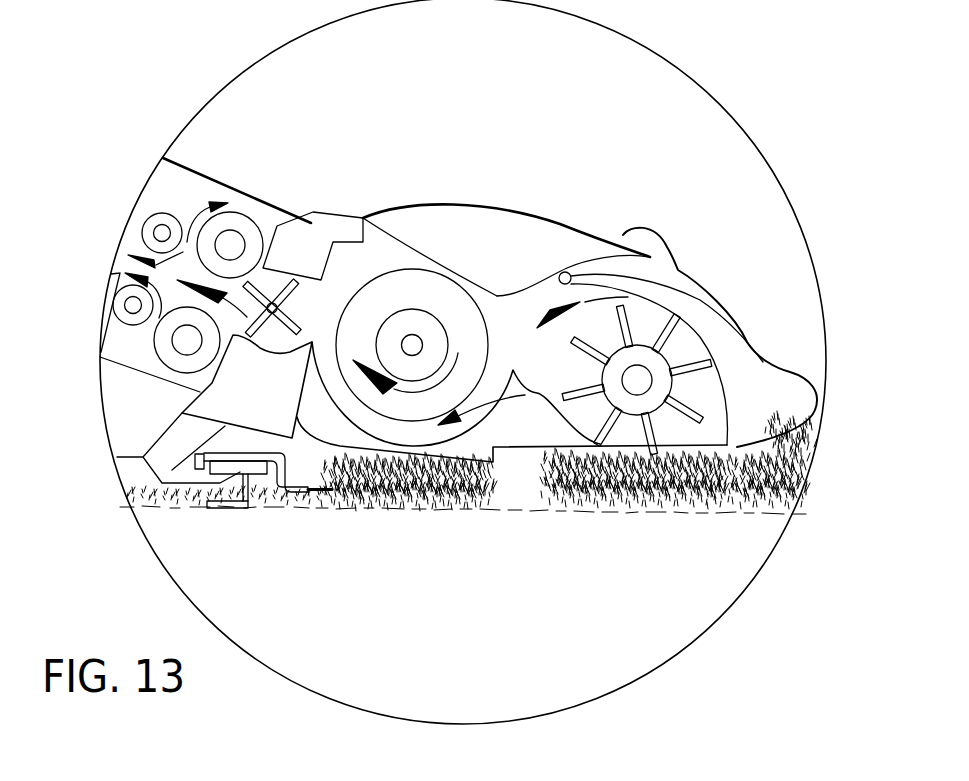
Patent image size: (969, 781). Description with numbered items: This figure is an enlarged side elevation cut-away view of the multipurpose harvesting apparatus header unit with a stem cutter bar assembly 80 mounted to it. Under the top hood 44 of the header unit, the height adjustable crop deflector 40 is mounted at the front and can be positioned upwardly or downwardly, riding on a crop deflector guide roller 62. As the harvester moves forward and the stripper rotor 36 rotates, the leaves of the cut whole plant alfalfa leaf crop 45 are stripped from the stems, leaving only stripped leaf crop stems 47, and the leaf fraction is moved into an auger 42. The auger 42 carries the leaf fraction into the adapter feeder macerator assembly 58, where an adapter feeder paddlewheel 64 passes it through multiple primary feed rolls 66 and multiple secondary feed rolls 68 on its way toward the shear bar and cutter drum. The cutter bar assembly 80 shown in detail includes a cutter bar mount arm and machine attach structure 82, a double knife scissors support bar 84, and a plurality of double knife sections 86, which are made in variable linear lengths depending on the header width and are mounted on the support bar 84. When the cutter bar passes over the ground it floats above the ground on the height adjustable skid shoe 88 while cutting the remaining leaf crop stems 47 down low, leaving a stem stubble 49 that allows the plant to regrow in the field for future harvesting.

The stripper rotor 36 is at (653, 363).
The height adjustable crop deflector 40 is at (790, 393).
The auger 42 is at (425, 302).
The top hood 44 is at (510, 207).
The whole plant alfalfa leaf crop 45 is at (792, 447).
The stripped leaf crop stems 47 is at (603, 512).
The stem stubble 49 is at (153, 511).
The adapter feeder macerator assembly 58 is at (293, 251).
The crop deflector guide roller 62 is at (566, 271).
The adapter feeder paddlewheel 64 is at (290, 305).
The primary feed rolls 66 is at (248, 222).
The secondary feed rolls 68 is at (173, 215).
The stem cutter bar assembly 80 is at (296, 549).
The cutter bar mount arm and machine attach structure 82 is at (117, 457).
The double knife scissors support bar 84 is at (238, 508).
The double knife sections 86 is at (323, 506).
The height adjustable skid shoe 88 is at (218, 508).